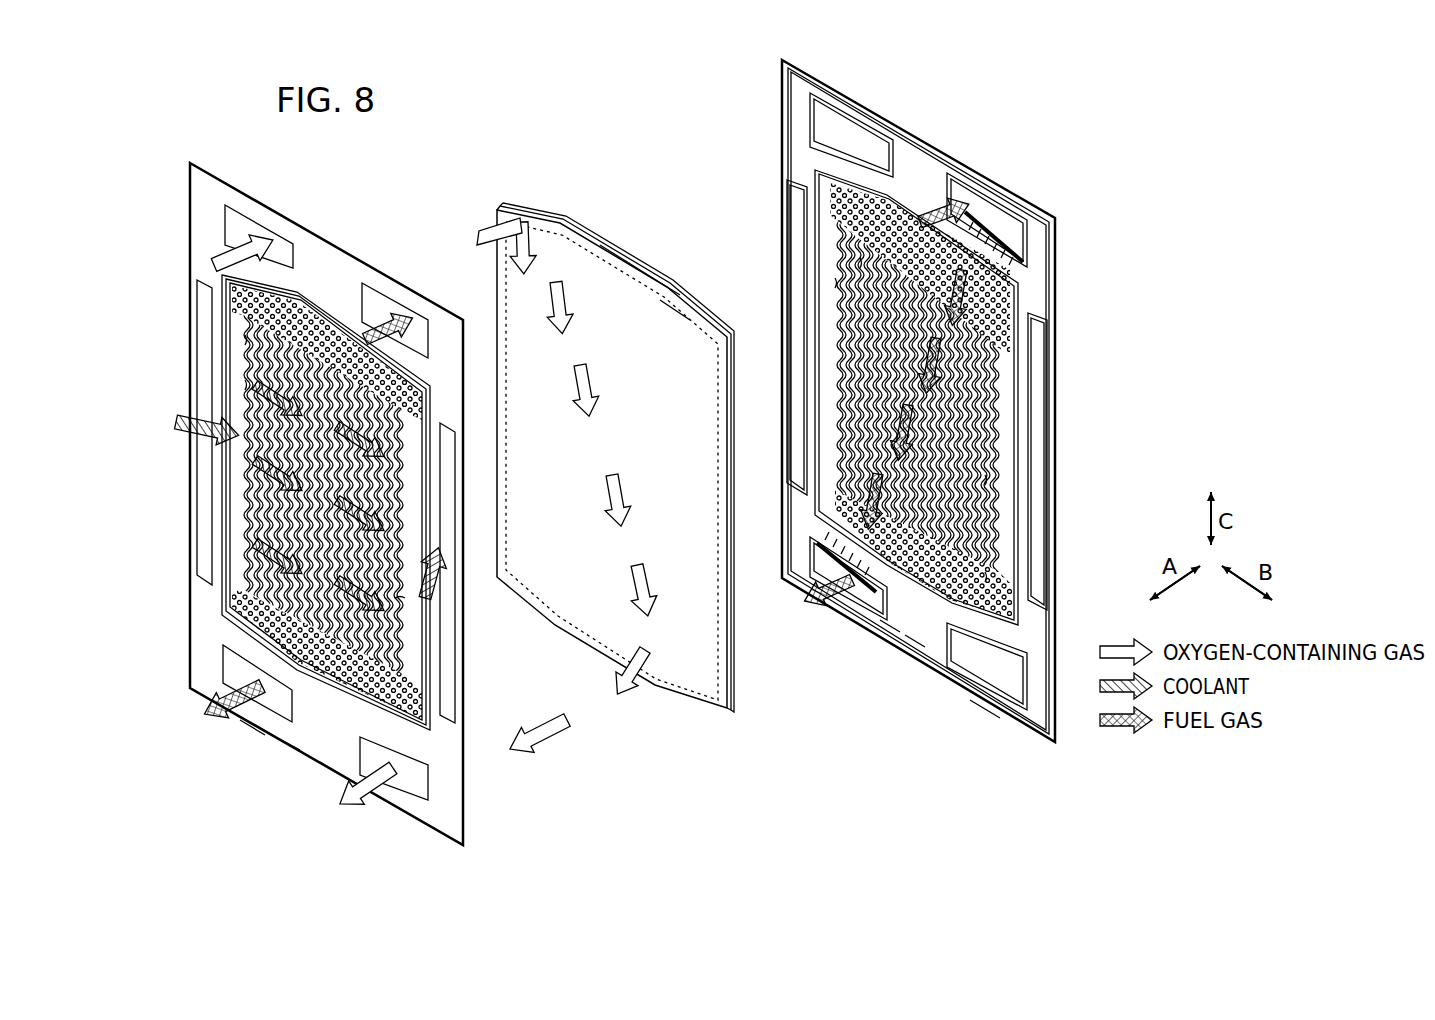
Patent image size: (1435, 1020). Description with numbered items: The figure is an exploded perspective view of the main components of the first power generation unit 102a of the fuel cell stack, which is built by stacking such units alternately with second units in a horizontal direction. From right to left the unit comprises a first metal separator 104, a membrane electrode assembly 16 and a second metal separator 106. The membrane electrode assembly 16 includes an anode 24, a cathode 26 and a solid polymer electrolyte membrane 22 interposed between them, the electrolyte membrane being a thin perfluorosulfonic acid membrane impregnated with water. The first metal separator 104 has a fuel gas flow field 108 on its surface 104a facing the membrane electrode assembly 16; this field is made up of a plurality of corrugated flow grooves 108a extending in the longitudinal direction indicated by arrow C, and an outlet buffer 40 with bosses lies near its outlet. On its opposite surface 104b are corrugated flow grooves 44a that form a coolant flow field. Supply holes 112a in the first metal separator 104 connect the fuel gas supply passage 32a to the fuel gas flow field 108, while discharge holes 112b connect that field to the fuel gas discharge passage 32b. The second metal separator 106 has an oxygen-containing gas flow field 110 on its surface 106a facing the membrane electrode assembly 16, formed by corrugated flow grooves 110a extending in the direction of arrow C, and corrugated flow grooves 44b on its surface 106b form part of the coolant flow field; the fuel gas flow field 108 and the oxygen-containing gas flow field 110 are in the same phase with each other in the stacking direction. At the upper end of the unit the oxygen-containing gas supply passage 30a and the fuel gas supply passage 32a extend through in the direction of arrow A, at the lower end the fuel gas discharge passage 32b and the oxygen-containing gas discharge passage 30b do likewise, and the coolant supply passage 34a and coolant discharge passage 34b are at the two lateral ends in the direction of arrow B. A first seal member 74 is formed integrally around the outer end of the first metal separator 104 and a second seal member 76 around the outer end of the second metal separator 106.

The membrane electrode assembly 16 is at (500, 185).
The solid polymer electrolyte membrane 22 is at (664, 286).
The anode 24 is at (672, 330).
The cathode 26 is at (622, 290).
The oxygen-containing gas supply passage 30a is at (246, 238).
The oxygen-containing gas discharge passage 30b is at (422, 770).
The fuel gas supply passage 32a is at (385, 308).
The fuel gas discharge passage 32b is at (228, 672).
The coolant supply passage 34a is at (205, 502).
The coolant discharge passage 34b is at (450, 678).
The outlet buffer 40 is at (985, 575).
The corrugated flow grooves 44a is at (835, 283).
The corrugated flow grooves 44b is at (245, 338).
The first seal member 74 is at (985, 703).
The second seal member 76 is at (255, 727).
The first power generation unit 102a is at (380, 170).
The first metal separator 104 is at (782, 82).
The surface of first metal separator 104a is at (900, 645).
The surface of first metal separator 104b is at (932, 660).
The second metal separator 106 is at (188, 163).
The surface of second metal separator 106a is at (330, 745).
The surface of second metal separator 106b is at (296, 732).
The fuel gas flow field 108 is at (990, 410).
The corrugated flow grooves 108a is at (862, 262).
The oxygen-containing gas flow field 110 is at (400, 505).
The corrugated flow grooves 110a is at (245, 380).
The supply holes 112a is at (1010, 240).
The discharge holes 112b is at (862, 600).